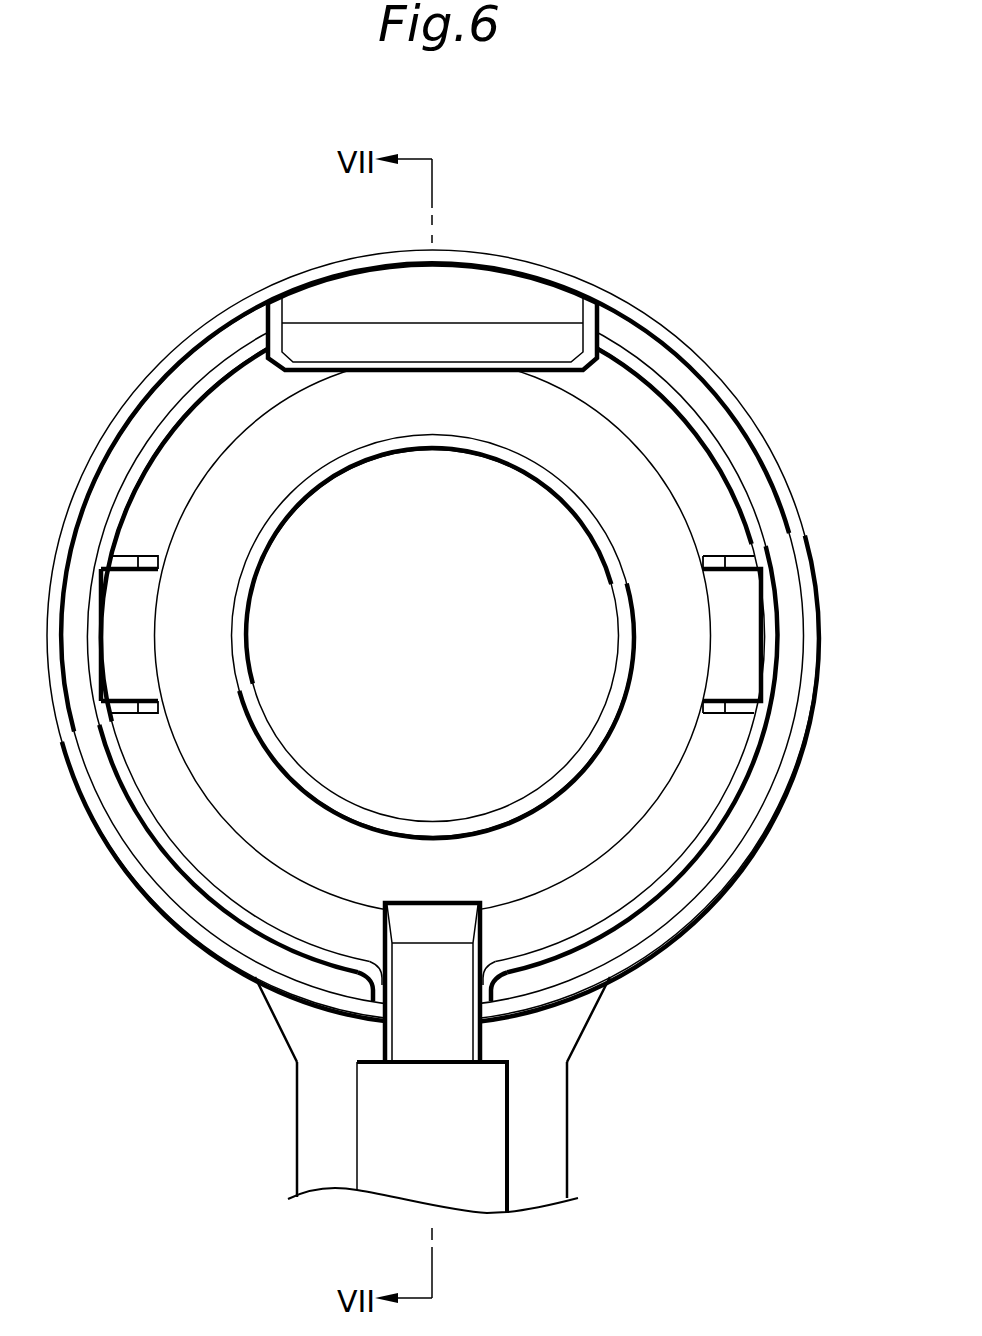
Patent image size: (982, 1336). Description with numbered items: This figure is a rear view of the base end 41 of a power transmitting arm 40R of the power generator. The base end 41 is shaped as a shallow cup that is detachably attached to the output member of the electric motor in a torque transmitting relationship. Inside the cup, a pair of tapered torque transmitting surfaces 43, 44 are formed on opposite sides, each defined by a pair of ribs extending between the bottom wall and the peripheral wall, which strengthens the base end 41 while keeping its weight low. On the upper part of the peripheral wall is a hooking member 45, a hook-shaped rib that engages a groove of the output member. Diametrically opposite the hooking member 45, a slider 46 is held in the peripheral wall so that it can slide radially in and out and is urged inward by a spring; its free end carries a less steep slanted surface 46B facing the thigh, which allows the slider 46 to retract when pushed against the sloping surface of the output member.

The base end 41 is at (676, 345).
The tapered torque transmitting surface 43 is at (703, 708).
The tapered torque transmitting surface 44 is at (160, 708).
The hooking member 45 is at (497, 333).
The slider 46 is at (460, 1032).
The slanted surface 46B is at (422, 915).
The power transmitting arm 40R is at (568, 1178).